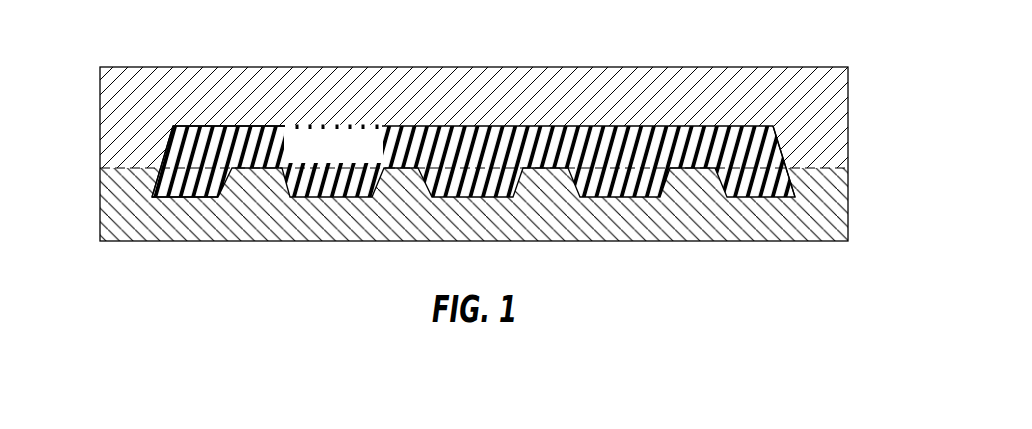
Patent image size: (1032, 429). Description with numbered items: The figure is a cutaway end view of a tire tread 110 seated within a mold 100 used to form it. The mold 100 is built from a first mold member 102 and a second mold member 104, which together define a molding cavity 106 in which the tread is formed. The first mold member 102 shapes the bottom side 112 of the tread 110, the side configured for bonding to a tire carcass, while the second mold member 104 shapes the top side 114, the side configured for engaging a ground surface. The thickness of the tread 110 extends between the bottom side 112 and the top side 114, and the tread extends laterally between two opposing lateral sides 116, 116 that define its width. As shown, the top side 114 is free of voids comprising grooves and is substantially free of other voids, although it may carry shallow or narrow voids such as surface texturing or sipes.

The mold 100 is at (792, 66).
The first mold member 102 is at (848, 218).
The second mold member 104 is at (848, 91).
The molding cavity 106 is at (303, 129).
The tire tread 110 is at (194, 147).
The bottom side 112 is at (183, 198).
The top side 114 is at (267, 127).
The lateral sides 116 is at (156, 182).